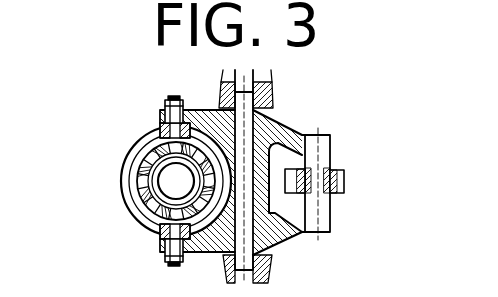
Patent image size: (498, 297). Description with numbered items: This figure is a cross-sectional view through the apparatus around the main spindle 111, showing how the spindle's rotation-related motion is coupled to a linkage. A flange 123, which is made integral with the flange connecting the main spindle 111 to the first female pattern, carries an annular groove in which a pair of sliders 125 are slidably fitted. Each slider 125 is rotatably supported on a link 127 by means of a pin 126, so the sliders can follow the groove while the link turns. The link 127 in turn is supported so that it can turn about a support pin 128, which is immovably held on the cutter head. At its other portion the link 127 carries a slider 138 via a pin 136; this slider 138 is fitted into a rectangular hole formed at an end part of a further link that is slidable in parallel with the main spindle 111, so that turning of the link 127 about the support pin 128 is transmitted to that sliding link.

The main spindle 111 is at (148, 187).
The flange 123 is at (124, 166).
The sliders 125 is at (160, 130).
The pin 126 is at (170, 116).
The link 127 is at (290, 132).
The support pin 128 is at (250, 126).
The pin 136 is at (318, 145).
The slider 138 is at (338, 181).